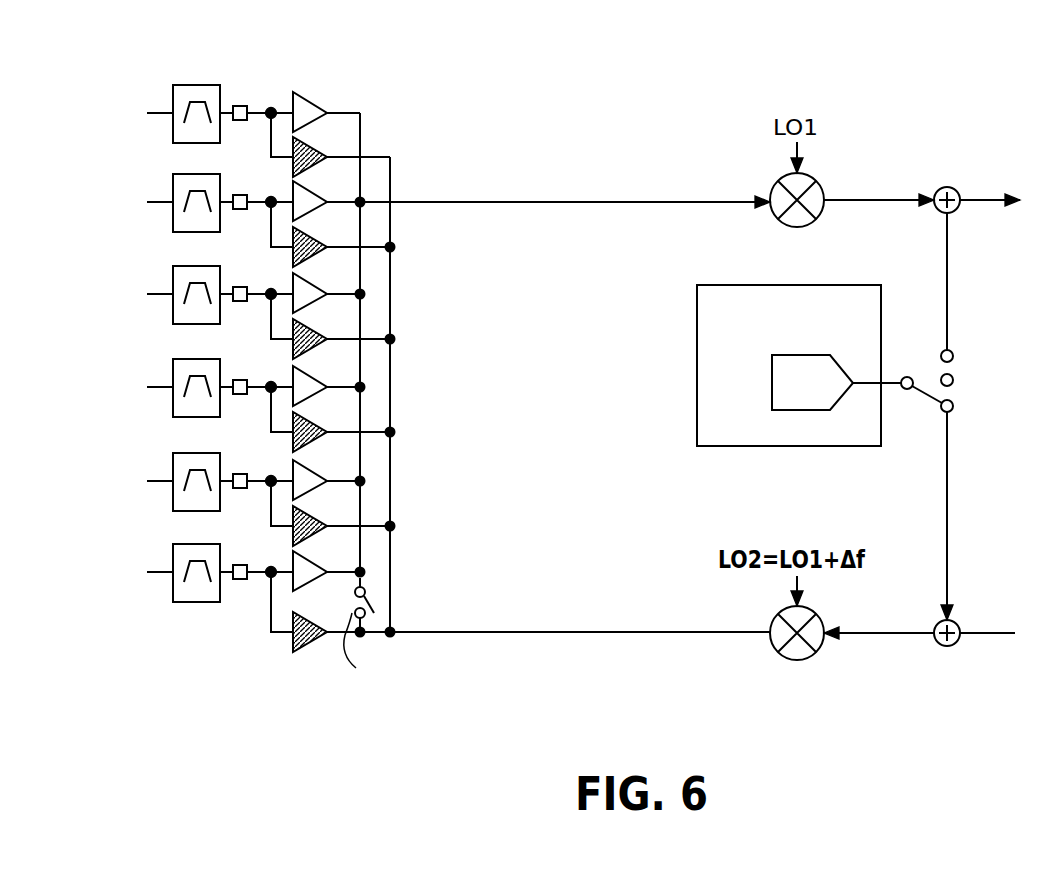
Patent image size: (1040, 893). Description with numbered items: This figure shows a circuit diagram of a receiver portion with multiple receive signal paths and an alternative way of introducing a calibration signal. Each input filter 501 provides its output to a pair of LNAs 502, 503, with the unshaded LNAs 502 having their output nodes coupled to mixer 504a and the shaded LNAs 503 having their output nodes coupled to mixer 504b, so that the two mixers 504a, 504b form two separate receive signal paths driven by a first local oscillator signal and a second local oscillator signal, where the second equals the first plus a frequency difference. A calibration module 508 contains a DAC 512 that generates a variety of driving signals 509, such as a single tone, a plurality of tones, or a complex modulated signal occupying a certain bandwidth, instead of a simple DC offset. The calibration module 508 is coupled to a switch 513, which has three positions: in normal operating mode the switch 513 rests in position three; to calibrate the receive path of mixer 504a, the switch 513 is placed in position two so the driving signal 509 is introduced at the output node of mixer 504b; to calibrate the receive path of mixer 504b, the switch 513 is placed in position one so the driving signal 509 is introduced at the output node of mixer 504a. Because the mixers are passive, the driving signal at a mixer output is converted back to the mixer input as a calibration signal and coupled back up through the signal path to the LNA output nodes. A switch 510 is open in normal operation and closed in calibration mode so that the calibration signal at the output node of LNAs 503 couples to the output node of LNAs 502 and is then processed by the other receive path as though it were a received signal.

The filter 501 is at (193, 85).
The LNA 502 is at (305, 92).
The LNA 503 is at (315, 140).
The mixer 504a is at (820, 178).
The mixer 504b is at (776, 650).
The calibration module 508 is at (845, 284).
The driving signal 509 is at (958, 620).
The switch 510 is at (373, 600).
The DAC 512 is at (793, 410).
The switch 513 is at (910, 333).